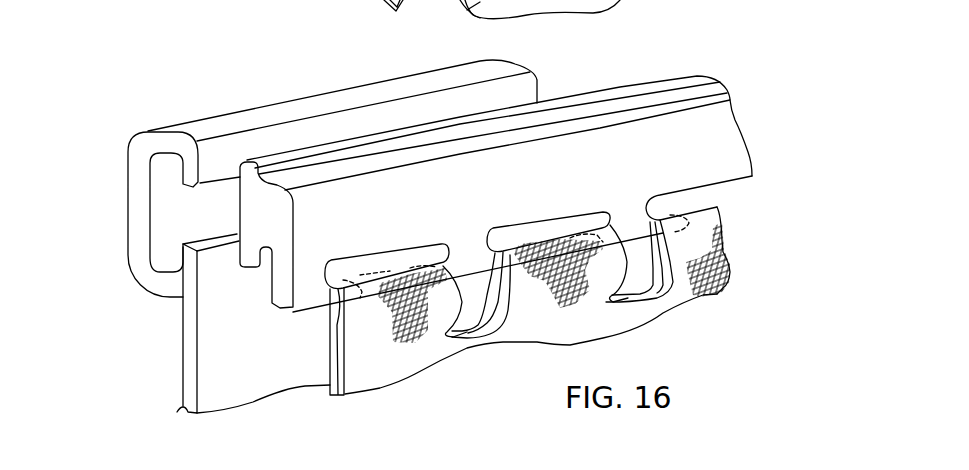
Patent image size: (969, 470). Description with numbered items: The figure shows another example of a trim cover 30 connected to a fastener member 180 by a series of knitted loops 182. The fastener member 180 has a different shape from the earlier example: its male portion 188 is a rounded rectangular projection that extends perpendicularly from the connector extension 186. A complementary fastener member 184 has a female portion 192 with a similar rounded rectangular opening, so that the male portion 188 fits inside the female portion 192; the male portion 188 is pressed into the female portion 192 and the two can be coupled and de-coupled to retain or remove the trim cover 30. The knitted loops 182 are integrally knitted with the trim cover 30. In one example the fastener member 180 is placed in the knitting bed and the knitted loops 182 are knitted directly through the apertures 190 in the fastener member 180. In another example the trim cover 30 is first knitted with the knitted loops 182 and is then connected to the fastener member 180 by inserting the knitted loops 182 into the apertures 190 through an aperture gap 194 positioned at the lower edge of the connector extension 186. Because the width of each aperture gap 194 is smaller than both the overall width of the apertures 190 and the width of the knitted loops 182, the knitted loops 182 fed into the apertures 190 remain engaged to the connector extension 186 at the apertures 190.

The trim cover 30 is at (696, 318).
The fastener member 180 is at (732, 110).
The knitted loops 182 is at (363, 328).
The complementary fastener member 184 is at (140, 218).
The connector extension 186 is at (308, 275).
The male portion 188 is at (250, 200).
The apertures 190 is at (417, 243).
The female portion 192 is at (165, 140).
The aperture gap 194 is at (381, 276).